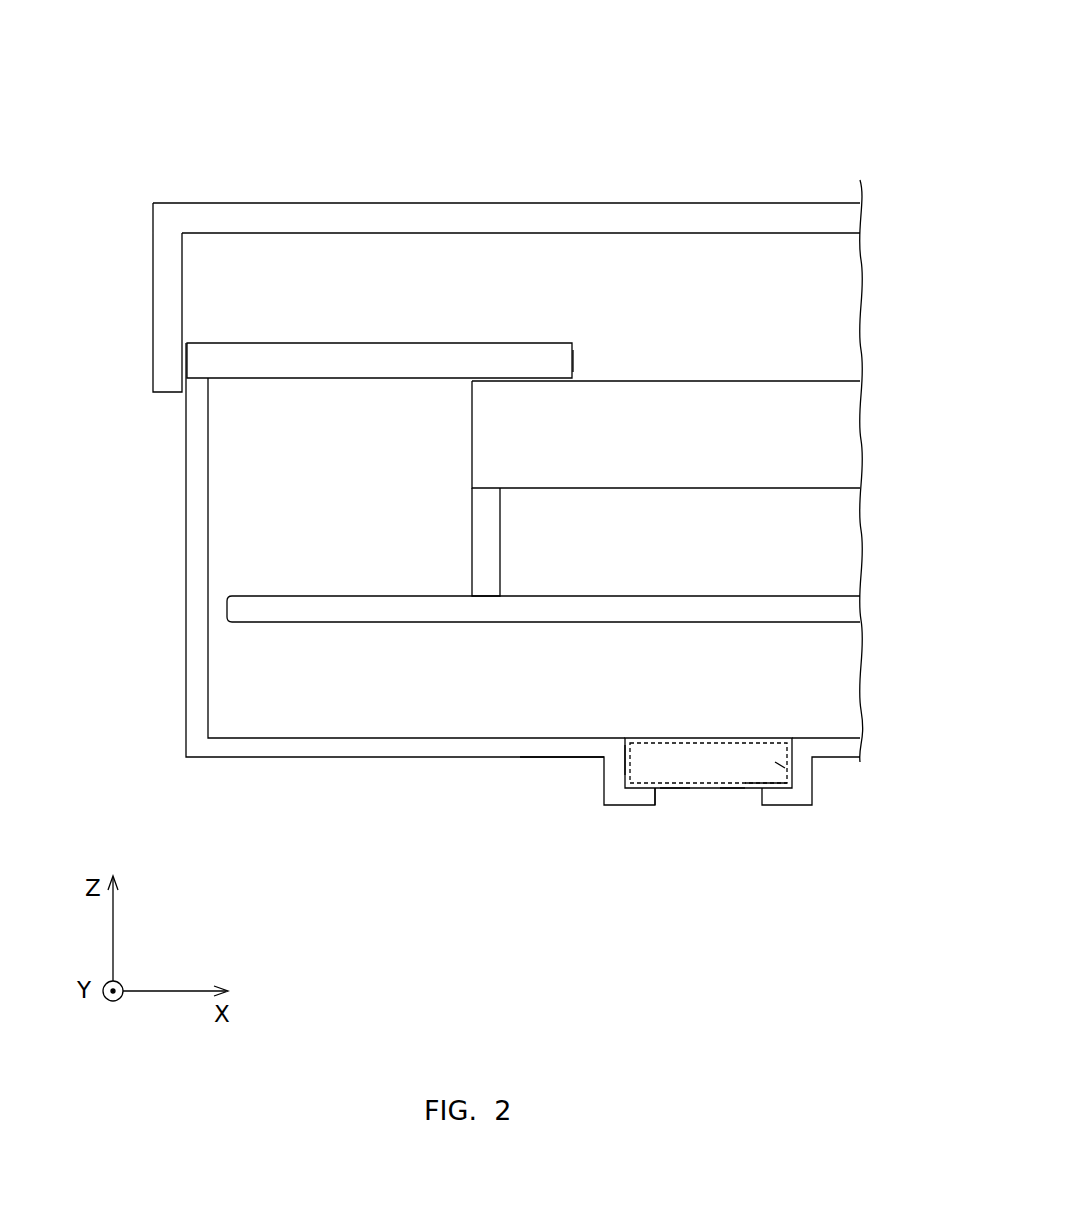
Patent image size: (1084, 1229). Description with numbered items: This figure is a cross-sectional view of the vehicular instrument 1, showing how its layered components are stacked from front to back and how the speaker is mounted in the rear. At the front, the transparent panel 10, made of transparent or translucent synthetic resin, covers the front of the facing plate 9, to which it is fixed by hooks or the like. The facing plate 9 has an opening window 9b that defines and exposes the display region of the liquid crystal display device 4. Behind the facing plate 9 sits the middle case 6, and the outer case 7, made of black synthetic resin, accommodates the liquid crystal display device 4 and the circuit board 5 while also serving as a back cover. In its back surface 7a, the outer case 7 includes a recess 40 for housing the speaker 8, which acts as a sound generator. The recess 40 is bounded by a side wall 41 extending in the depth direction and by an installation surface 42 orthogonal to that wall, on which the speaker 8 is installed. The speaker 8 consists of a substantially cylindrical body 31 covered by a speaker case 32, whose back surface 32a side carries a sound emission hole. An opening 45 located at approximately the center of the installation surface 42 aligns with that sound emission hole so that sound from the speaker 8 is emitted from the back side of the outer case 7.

The vehicular instrument 1 is at (250, 112).
The liquid crystal display device 4 is at (800, 381).
The circuit board 5 is at (274, 622).
The middle case 6 is at (472, 525).
The outer case 7 is at (186, 448).
The back surface 7a is at (473, 759).
The speaker 8 is at (672, 790).
The facing plate 9 is at (238, 343).
The opening window 9b is at (574, 360).
The transparent panel 10 is at (373, 202).
The body 31 is at (729, 790).
The speaker case 32 is at (624, 768).
The back surface 32a is at (714, 789).
The recess 40 is at (620, 724).
The side wall 41 is at (782, 763).
The installation surface 42 is at (652, 786).
The opening 45 is at (745, 790).